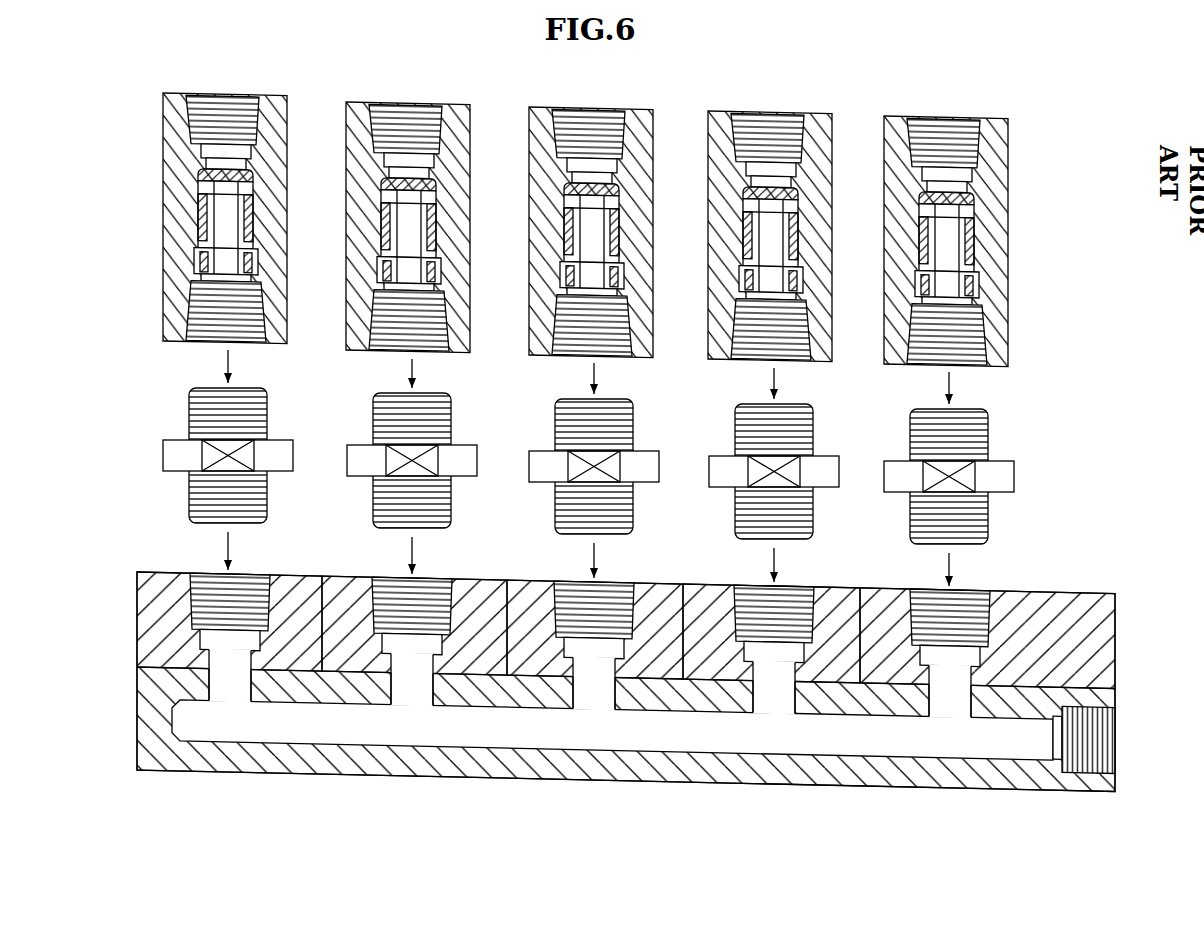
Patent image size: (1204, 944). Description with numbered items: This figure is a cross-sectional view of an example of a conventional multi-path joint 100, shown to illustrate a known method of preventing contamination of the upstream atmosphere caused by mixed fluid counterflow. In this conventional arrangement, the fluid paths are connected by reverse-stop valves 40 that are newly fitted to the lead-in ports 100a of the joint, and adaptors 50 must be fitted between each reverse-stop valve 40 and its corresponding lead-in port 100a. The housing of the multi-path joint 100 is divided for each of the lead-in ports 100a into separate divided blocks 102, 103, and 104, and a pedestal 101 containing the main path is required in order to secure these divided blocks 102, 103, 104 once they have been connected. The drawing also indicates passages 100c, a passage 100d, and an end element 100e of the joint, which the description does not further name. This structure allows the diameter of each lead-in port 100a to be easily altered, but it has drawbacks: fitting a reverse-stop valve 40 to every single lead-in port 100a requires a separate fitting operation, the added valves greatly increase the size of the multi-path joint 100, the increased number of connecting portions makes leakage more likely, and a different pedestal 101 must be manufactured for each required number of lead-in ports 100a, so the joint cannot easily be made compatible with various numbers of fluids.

The reverse-stop valve 40 is at (274, 128).
The adaptor 50 is at (178, 456).
The multi-path joint 100 is at (661, 659).
The lead-in port 100a is at (590, 646).
The communication passage 100c is at (590, 693).
The fuel passage 100d is at (612, 730).
The plug 100e is at (1084, 739).
The pedestal 101 is at (626, 729).
The divided block 102 is at (229, 621).
The divided block 103 is at (591, 629).
The divided block 104 is at (987, 638).